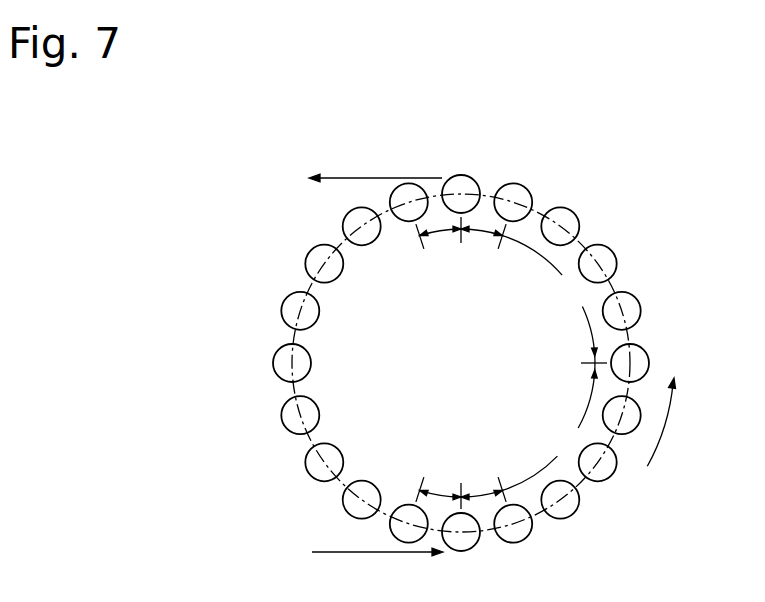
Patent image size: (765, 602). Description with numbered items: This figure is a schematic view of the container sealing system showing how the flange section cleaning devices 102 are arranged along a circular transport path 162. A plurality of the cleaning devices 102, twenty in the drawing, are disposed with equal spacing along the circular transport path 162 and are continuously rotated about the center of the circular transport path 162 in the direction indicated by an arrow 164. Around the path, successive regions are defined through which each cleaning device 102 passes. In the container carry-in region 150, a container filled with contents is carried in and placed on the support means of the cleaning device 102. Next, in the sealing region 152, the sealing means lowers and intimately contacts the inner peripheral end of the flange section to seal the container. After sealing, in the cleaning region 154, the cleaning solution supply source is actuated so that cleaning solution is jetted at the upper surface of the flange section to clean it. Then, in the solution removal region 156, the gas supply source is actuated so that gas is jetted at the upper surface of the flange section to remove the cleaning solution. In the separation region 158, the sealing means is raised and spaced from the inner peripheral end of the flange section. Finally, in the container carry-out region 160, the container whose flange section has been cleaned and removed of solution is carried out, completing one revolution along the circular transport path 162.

The flange section cleaning device 102 is at (468, 176).
The container carry-in region 150 is at (438, 484).
The sealing region 152 is at (483, 488).
The cleaning region 154 is at (539, 460).
The solution removal region 156 is at (554, 332).
The separation region 158 is at (483, 241).
The container carry-out region 160 is at (438, 237).
The circular transport path 162 is at (612, 284).
The arrow 164 is at (663, 438).